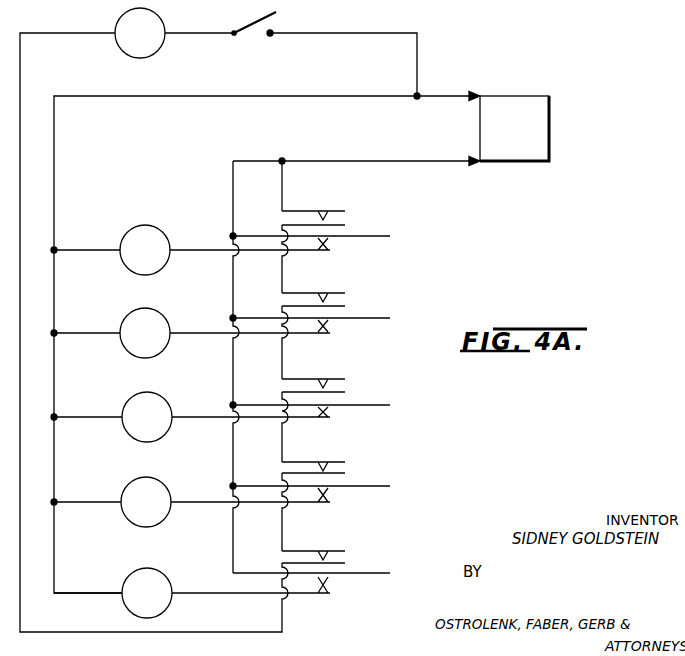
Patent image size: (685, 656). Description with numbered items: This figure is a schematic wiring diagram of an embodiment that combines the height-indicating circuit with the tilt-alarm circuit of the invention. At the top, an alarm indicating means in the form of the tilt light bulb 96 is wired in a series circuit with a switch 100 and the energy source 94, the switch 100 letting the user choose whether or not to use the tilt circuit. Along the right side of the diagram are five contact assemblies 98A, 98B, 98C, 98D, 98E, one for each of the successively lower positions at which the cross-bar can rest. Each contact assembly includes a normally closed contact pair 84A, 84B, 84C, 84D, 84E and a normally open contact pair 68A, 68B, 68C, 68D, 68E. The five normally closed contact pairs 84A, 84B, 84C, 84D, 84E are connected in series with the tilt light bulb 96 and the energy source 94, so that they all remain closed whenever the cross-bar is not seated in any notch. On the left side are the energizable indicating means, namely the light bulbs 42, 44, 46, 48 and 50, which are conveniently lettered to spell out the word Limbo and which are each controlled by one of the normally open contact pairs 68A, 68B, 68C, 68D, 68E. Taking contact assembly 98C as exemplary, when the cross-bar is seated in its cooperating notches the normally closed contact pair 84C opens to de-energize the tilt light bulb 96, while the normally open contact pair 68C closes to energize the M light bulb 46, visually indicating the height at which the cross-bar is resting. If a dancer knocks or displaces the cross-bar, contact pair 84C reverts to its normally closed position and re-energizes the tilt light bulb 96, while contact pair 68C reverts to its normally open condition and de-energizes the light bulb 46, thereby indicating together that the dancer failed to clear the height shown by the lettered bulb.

The tilt light bulb 96 is at (152, 52).
The switch 100 is at (250, 40).
The energy source 94 is at (526, 143).
The light bulb 42 is at (152, 225).
The light bulb 44 is at (152, 310).
The M light bulb 46 is at (162, 396).
The light bulb 48 is at (165, 485).
The light bulb 50 is at (168, 573).
The normally closed contact pair 84A is at (340, 221).
The normally closed contact pair 84B is at (340, 295).
The normally closed contact pair 84C is at (340, 382).
The normally closed contact pair 84D is at (340, 465).
The normally closed contact pair 84E is at (340, 554).
The contact assembly 98A is at (383, 232).
The contact assembly 98B is at (383, 313).
The contact assembly 98C is at (385, 402).
The contact assembly 98D is at (385, 482).
The contact assembly 98E is at (385, 570).
The normally open contact pair 68A is at (337, 249).
The normally open contact pair 68B is at (337, 331).
The normally open contact pair 68C is at (337, 414).
The normally open contact pair 68D is at (337, 499).
The normally open contact pair 68E is at (337, 589).